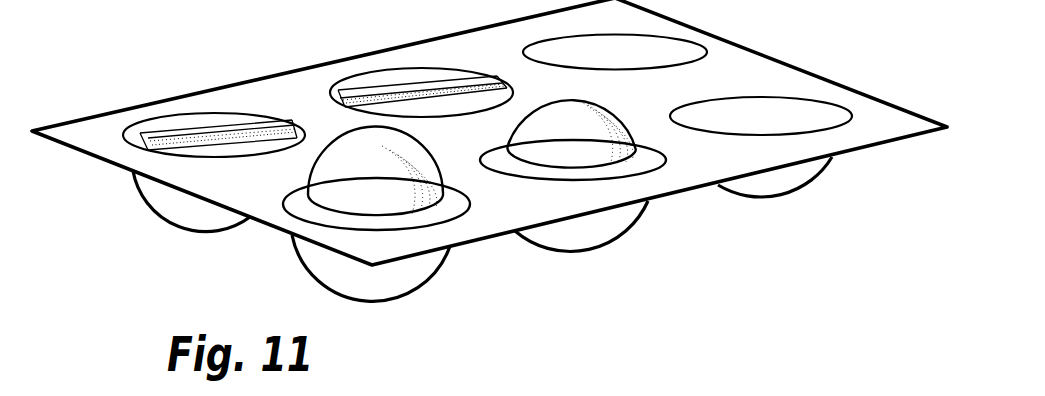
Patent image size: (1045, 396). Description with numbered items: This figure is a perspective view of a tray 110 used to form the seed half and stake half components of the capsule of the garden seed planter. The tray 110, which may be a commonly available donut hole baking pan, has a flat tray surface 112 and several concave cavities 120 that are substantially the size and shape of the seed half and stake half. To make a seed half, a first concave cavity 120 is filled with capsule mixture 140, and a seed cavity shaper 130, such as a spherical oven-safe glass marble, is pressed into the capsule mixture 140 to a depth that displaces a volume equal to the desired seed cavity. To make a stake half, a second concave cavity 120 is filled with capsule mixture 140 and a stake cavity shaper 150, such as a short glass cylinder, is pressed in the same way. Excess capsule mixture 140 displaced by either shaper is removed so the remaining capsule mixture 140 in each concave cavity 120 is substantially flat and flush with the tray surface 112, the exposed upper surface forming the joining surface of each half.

The tray 110 is at (240, 83).
The tray surface 112 is at (615, 36).
The concave cavity 120 is at (815, 123).
The seed cavity shaper 130 is at (335, 191).
The capsule mixture 140 is at (403, 108).
The stake cavity shaper 150 is at (147, 148).